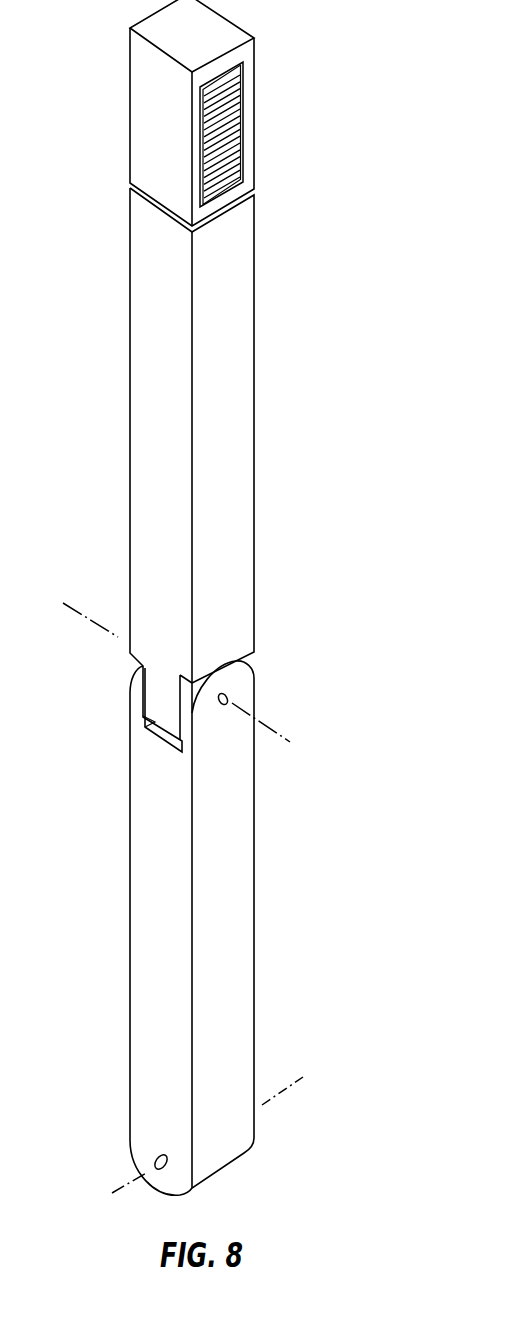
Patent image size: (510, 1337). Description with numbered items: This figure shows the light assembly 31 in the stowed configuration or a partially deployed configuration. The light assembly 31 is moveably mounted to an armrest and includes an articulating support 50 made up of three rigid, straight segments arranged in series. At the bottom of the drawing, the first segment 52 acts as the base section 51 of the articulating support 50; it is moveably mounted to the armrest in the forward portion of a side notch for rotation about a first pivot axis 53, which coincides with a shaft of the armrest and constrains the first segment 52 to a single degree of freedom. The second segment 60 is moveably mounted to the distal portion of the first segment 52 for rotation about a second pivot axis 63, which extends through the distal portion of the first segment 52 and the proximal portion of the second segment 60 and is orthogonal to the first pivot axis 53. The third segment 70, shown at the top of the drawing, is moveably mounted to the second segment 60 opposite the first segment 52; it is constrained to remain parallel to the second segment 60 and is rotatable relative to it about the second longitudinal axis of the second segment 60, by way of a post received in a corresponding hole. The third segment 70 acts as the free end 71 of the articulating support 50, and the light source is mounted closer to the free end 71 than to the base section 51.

The light assembly 31 is at (322, 214).
The third segment 70 is at (130, 138).
The free end 71 is at (130, 63).
The articulating support 50 is at (255, 453).
The second segment 60 is at (130, 453).
The first segment 52 is at (130, 965).
The base section 51 is at (130, 1106).
The second pivot axis 63 is at (288, 735).
The first pivot axis 53 is at (283, 1088).